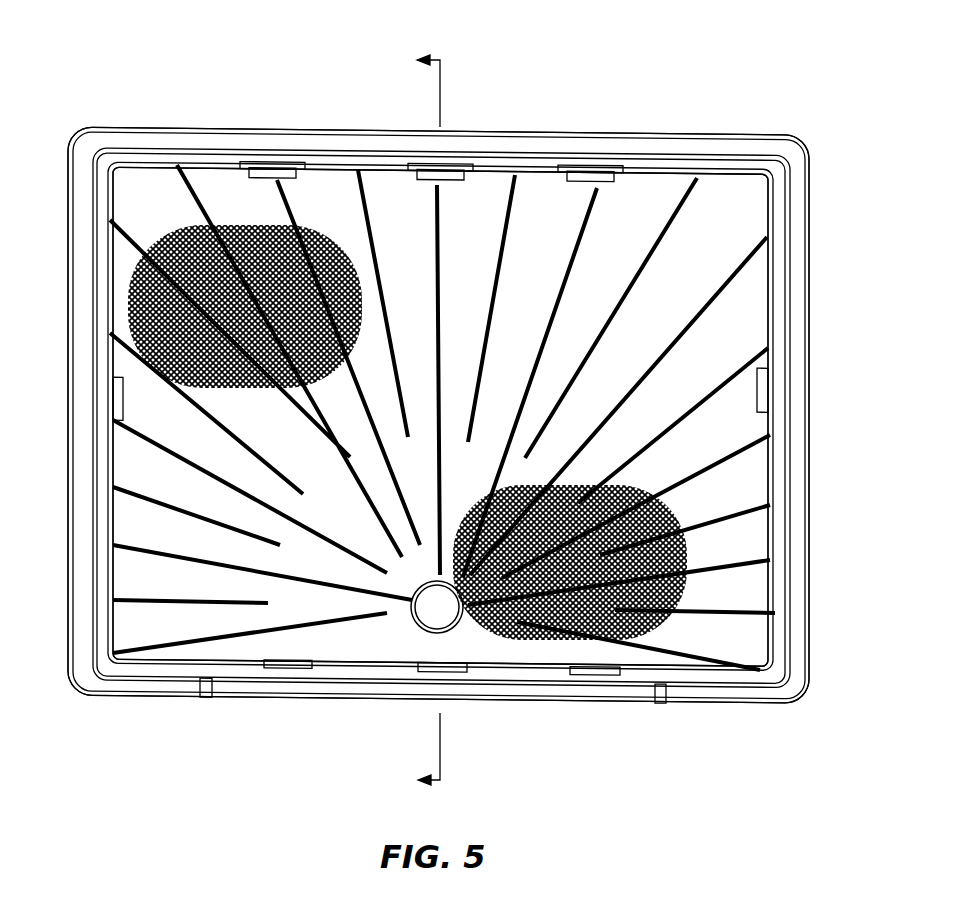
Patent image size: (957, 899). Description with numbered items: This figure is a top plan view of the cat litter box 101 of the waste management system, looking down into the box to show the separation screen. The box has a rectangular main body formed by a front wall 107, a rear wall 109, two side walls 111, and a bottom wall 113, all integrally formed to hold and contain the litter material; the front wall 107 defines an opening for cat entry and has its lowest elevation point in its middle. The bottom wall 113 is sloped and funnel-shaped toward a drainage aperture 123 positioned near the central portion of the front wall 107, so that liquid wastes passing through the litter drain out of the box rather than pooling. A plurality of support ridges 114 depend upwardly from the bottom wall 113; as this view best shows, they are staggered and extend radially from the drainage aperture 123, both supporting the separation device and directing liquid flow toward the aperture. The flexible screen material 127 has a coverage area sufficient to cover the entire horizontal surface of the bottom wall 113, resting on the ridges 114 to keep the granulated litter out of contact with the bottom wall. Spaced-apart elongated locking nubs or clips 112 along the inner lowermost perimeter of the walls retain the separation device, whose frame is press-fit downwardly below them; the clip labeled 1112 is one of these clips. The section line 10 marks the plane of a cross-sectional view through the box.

The cat litter box 101 is at (158, 70).
The front wall 107 is at (502, 673).
The rear wall 109 is at (541, 168).
The side walls 111 is at (102, 512).
The locking nubs or clips 112 is at (277, 170).
The bottom wall 113 is at (483, 212).
The support ridges 114 is at (370, 217).
The drainage aperture 123 is at (440, 608).
The screen material 127 is at (253, 245).
The mounting tab 1112 is at (597, 673).
The section line 10 is at (412, 425).